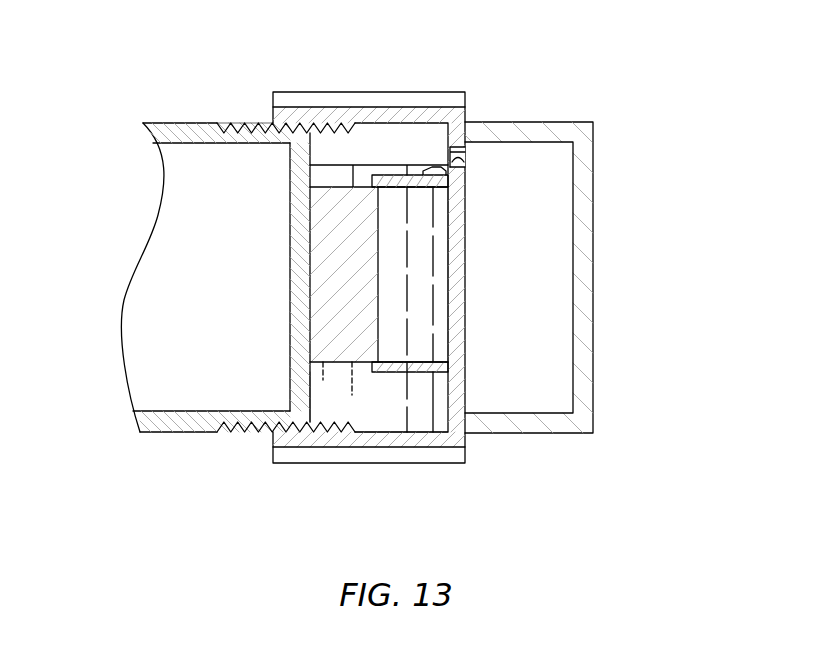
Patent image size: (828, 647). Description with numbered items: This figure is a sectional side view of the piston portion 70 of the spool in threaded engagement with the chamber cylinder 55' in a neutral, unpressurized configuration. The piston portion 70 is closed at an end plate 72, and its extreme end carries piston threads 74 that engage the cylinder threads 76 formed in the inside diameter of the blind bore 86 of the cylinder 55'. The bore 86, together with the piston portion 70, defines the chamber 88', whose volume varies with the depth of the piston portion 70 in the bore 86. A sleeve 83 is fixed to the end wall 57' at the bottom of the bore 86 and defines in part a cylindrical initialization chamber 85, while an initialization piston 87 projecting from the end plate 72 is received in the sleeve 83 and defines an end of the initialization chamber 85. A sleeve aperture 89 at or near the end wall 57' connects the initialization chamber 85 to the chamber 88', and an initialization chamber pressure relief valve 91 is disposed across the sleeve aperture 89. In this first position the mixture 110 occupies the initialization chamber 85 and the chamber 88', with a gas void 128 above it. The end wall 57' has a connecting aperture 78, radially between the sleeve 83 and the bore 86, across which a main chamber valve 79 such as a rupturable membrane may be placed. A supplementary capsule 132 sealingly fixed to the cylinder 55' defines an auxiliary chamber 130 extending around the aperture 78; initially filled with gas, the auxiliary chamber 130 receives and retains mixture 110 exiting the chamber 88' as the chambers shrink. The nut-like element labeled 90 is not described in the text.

The piston portion 70 is at (184, 433).
The end plate 72 is at (318, 145).
The piston threads 74 is at (229, 121).
The cylinder threads 76 is at (333, 137).
The connecting aperture 78 is at (466, 150).
The main chamber valve 79 is at (466, 160).
The sleeve 83 is at (427, 373).
The initialization chamber 85 is at (423, 293).
The blind bore 86 is at (417, 417).
The initialization piston 87 is at (335, 375).
The chamber 88' is at (379, 198).
The sleeve aperture 89 is at (438, 190).
The cap 90 is at (304, 92).
The initialization chamber pressure relief valve 91 is at (436, 155).
The chamber cylinder 55' is at (418, 245).
The end wall 57' is at (421, 372).
The mixture 110 is at (380, 397).
The void 128 is at (370, 145).
The auxiliary chamber 130 is at (547, 143).
The supplementary capsule 132 is at (592, 412).